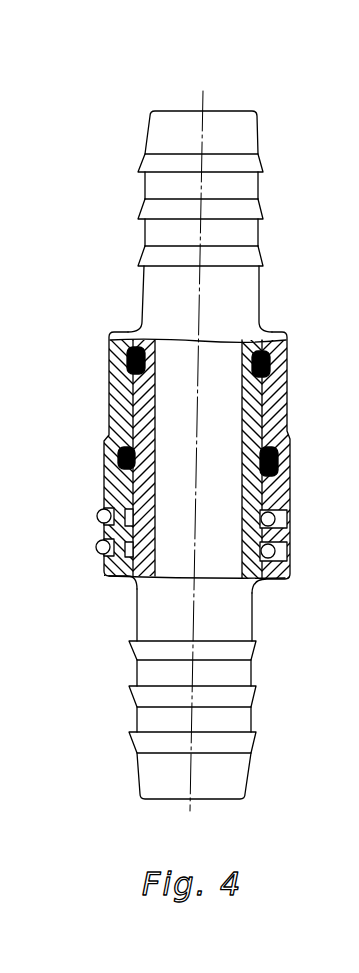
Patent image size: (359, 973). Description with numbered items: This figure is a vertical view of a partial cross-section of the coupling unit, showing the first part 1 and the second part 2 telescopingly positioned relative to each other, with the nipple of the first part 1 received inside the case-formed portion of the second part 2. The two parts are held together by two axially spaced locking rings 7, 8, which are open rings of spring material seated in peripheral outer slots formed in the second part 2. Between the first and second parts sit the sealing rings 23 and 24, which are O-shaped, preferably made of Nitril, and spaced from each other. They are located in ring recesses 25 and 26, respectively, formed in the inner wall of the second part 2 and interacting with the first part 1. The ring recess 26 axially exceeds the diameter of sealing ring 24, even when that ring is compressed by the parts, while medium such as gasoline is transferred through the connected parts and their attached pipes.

The first part 1 is at (238, 610).
The second part 2 is at (243, 307).
The first locking ring 7 is at (97, 515).
The second locking ring 8 is at (97, 548).
The sealing ring 23 is at (142, 351).
The sealing ring 24 is at (277, 463).
The ring recess 25 is at (265, 377).
The ring recess 26 is at (288, 437).